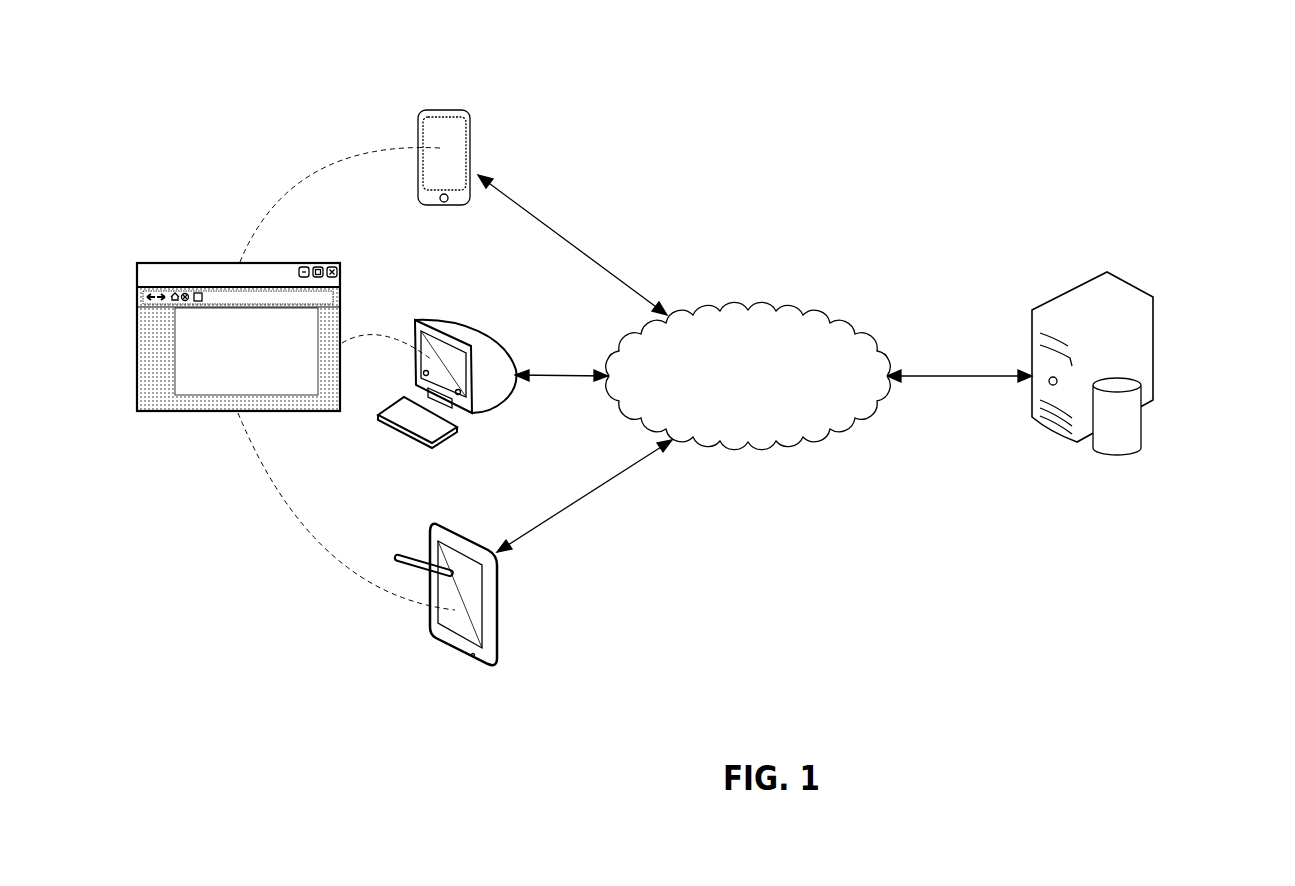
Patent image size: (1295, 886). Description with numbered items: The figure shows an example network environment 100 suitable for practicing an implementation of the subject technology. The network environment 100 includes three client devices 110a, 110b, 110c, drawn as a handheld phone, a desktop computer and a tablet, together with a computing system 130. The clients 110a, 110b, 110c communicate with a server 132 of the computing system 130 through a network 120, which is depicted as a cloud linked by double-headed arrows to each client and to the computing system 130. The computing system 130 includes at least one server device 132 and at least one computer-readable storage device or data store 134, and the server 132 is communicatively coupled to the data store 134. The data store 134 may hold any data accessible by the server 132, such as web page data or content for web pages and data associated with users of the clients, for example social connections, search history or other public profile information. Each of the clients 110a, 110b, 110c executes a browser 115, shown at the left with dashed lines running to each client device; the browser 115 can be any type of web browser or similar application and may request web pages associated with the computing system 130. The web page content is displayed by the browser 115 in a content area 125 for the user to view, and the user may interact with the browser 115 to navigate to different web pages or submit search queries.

The network environment 100 is at (988, 108).
The client device 110a is at (468, 118).
The client device 110b is at (462, 322).
The client device 110c is at (490, 667).
The browser 115 is at (209, 313).
The network 120 is at (748, 375).
The content area 125 is at (246, 351).
The computing system 130 is at (1156, 371).
The server 132 is at (1130, 283).
The data store 134 is at (1118, 451).